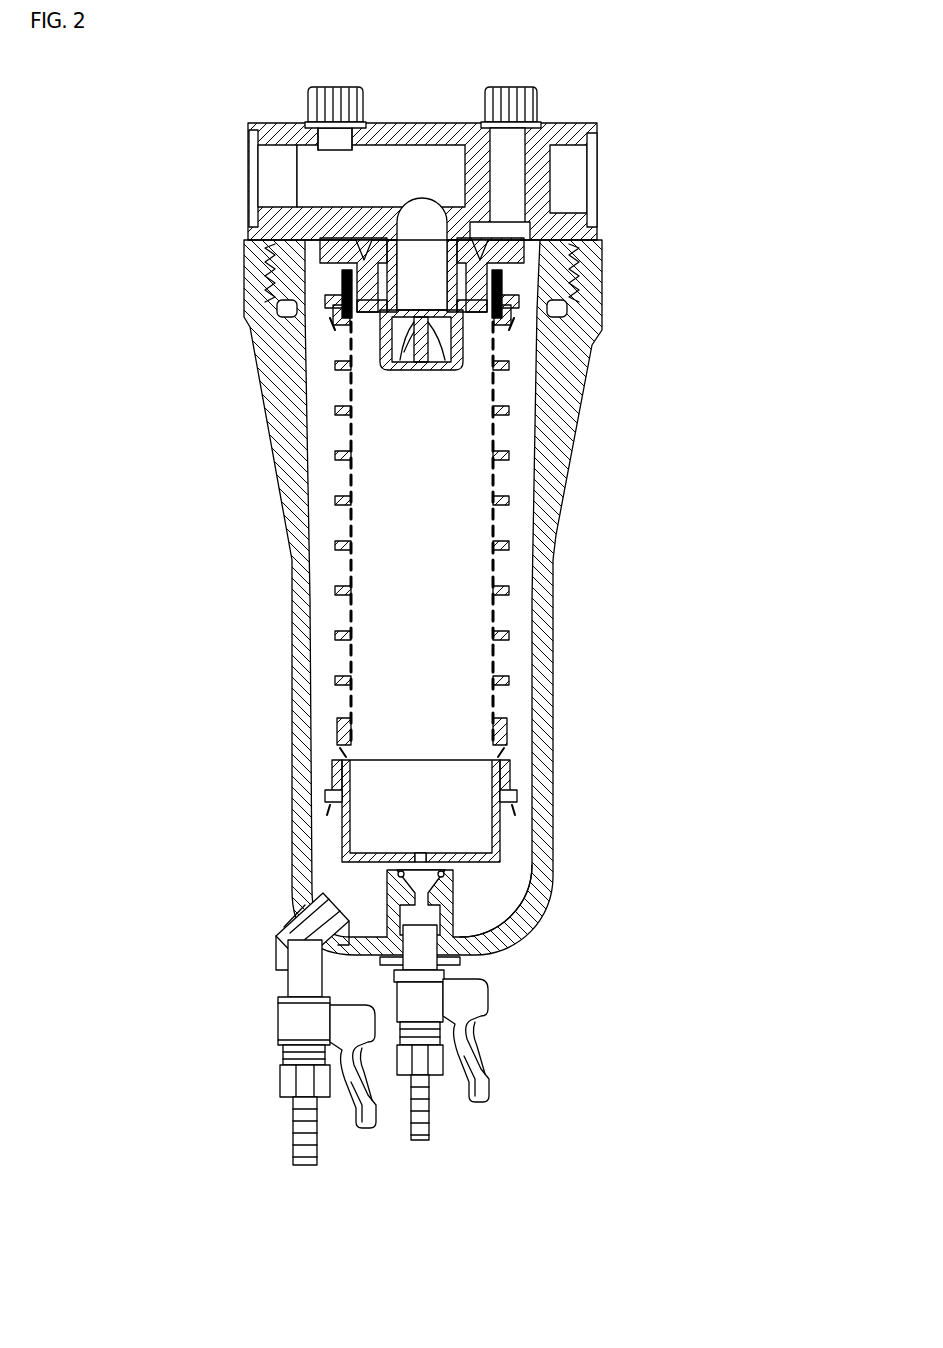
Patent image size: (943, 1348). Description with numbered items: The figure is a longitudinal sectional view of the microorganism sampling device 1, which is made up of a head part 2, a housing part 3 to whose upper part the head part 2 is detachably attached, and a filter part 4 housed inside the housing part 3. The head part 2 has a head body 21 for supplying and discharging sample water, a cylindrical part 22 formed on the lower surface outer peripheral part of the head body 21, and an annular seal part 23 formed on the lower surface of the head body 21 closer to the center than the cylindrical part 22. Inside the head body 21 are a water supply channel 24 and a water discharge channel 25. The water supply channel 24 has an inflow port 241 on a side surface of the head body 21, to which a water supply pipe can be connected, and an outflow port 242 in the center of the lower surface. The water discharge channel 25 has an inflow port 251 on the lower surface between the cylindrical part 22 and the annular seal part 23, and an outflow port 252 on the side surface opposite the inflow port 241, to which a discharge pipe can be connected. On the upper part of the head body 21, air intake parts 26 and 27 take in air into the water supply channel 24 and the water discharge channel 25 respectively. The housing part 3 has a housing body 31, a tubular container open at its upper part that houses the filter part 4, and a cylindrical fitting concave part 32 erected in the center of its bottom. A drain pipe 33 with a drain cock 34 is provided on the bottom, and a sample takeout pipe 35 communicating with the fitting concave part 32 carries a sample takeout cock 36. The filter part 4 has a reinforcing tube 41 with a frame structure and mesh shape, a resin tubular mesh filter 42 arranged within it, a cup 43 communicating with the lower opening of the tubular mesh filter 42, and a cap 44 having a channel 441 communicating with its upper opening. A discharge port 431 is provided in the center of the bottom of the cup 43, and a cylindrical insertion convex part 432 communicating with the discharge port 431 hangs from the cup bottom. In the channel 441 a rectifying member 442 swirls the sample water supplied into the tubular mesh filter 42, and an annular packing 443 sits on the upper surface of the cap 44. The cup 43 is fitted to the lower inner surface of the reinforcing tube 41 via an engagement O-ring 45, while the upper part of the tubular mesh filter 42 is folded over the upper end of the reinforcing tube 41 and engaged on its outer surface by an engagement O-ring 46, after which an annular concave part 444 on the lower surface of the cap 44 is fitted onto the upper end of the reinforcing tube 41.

The microorganism sampling device 1 is at (187, 102).
The head part 2 is at (692, 156).
The housing part 3 is at (177, 612).
The filter part 4 is at (528, 569).
The head body 21 is at (282, 125).
The cylindrical part 22 is at (288, 269).
The annular seal part 23 is at (363, 248).
The water supply channel 24 is at (383, 160).
The water discharge channel 25 is at (538, 166).
The air intake part 26 is at (312, 103).
The air intake part 27 is at (495, 105).
The housing body 31 is at (292, 497).
The fitting concave part 32 is at (393, 890).
The drain pipe 33 is at (300, 962).
The drain cock 34 is at (362, 1102).
The sample takeout pipe 35 is at (430, 952).
The sample takeout cock 36 is at (483, 1083).
The reinforcing tube 41 is at (505, 545).
The tubular mesh filter 42 is at (493, 605).
The cup 43 is at (497, 827).
The cap 44 is at (522, 268).
The engagement O-ring 45 is at (513, 790).
The engagement O-ring 46 is at (505, 300).
The inflow port 241 is at (265, 172).
The outflow port 242 is at (428, 228).
The inflow port 251 is at (508, 223).
The outflow port 252 is at (578, 180).
The discharge port 431 is at (420, 855).
The insertion convex part 432 is at (518, 880).
The channel 441 is at (430, 288).
The rectifying member 442 is at (460, 343).
The annular packing 443 is at (343, 248).
The annular concave part 444 is at (340, 289).